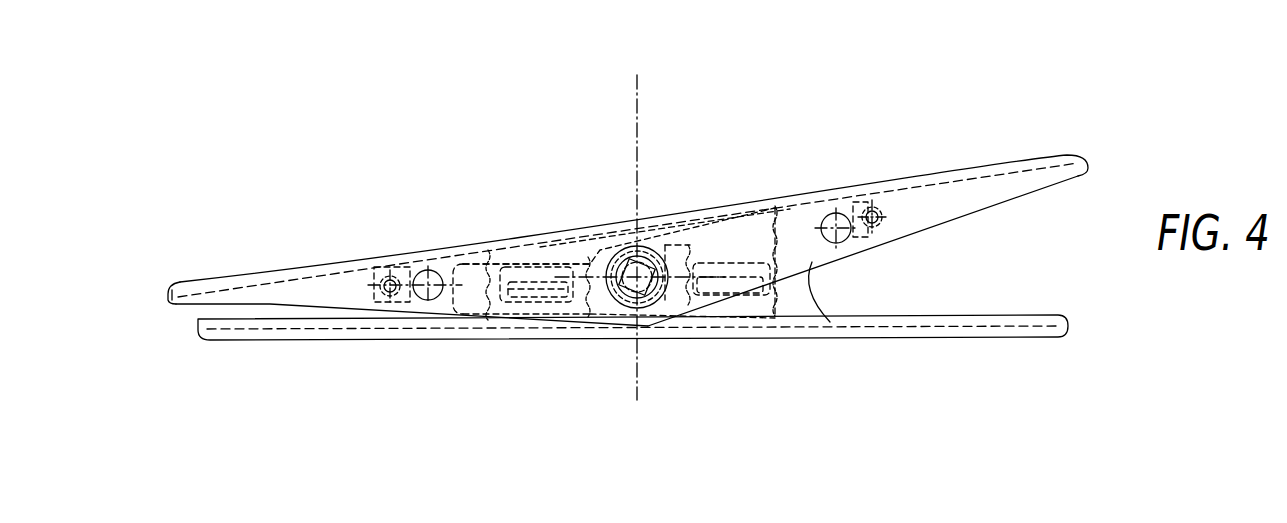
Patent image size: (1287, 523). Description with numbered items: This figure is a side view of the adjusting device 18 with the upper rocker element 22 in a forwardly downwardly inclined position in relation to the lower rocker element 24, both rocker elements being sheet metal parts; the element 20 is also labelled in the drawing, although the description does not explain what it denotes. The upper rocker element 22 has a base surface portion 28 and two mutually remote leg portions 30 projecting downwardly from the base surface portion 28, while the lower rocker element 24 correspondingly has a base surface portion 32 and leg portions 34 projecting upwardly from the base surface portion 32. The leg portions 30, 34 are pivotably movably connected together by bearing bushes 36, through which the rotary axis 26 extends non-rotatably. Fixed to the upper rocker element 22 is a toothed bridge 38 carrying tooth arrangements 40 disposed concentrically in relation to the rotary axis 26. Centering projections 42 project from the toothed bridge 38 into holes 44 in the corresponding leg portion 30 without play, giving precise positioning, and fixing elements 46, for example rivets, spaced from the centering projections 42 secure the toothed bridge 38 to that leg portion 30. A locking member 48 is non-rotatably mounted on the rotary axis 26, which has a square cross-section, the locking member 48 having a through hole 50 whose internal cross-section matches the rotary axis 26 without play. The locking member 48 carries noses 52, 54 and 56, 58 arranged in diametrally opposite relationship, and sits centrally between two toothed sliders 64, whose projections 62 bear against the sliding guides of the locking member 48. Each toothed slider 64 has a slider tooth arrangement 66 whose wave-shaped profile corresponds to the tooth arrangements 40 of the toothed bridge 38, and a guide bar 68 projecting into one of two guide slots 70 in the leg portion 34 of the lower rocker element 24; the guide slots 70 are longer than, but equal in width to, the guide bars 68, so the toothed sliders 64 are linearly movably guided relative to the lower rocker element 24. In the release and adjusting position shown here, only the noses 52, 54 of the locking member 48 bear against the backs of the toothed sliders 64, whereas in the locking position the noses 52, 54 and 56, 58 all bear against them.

The adjusting device 18 is at (976, 95).
The upper arm 20 is at (1032, 150).
The upper rocker element 22 is at (1024, 178).
The lower rocker element 24 is at (1026, 319).
The rotary axis 26 is at (642, 262).
The base surface portion 28 is at (302, 271).
The leg portions 30 is at (250, 293).
The base surface portion 32 is at (913, 335).
The leg portions 34 is at (800, 306).
The bearing bushes 36 is at (623, 296).
The toothed bridge 38 is at (444, 265).
The tooth arrangements 40 is at (478, 315).
The centering projections 42 is at (428, 283).
The holes 44 is at (440, 273).
The fixing elements 46 is at (388, 292).
The locking member 48 is at (612, 247).
The through hole 50 is at (636, 297).
The nose 52 is at (692, 262).
The nose 54 is at (538, 298).
The nose 56 is at (668, 245).
The nose 58 is at (594, 276).
The projections 62 is at (588, 267).
The toothed sliders 64 is at (542, 280).
The slider tooth arrangement 66 is at (490, 300).
The guide bar 68 is at (548, 290).
The guide slots 70 is at (528, 263).